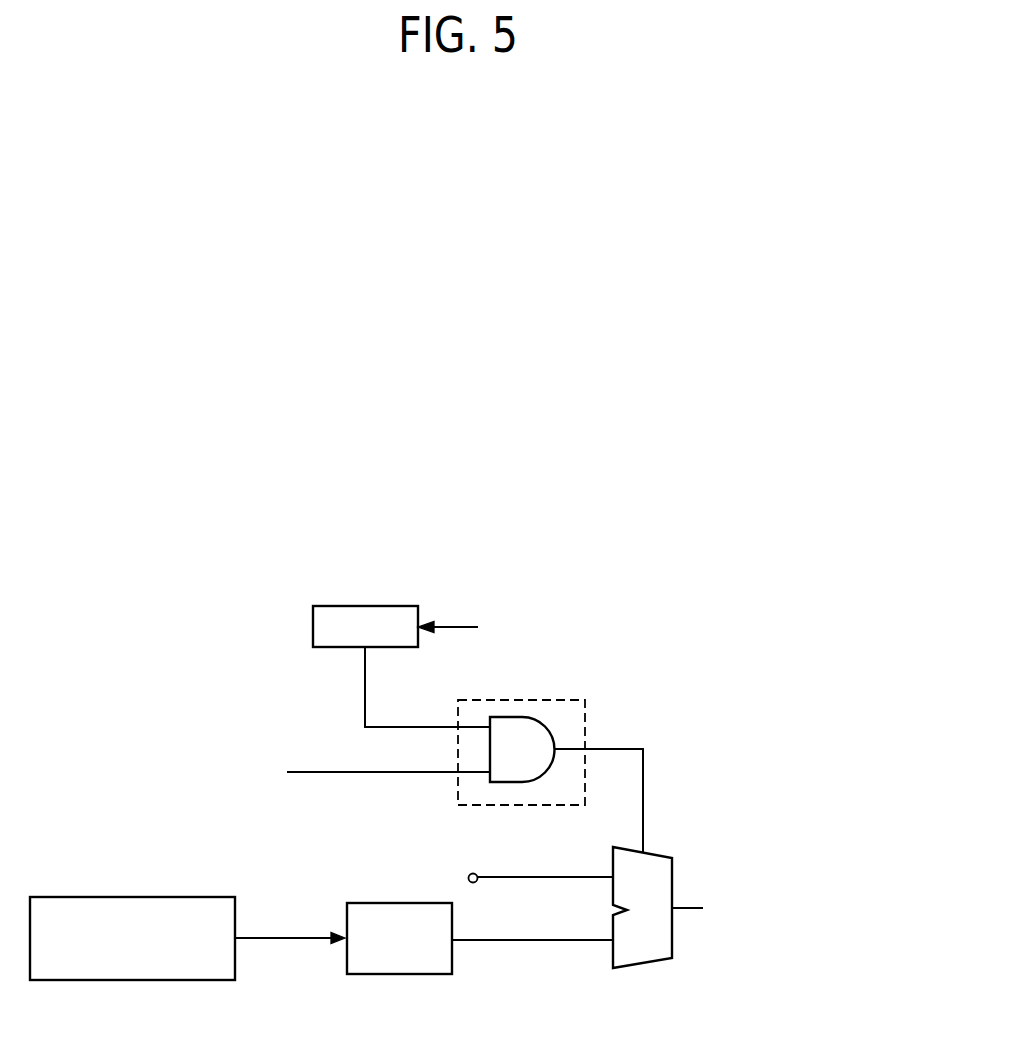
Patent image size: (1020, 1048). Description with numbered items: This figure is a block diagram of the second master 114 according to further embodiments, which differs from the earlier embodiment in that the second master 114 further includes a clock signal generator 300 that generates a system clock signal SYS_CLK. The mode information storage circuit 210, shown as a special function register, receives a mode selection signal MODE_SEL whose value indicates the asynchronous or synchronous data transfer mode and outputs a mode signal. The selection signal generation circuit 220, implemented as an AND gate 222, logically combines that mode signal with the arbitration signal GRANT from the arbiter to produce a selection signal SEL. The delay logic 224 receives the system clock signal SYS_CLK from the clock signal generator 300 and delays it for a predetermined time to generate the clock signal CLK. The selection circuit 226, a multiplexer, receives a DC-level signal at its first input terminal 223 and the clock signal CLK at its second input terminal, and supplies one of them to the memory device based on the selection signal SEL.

The second master 114 is at (680, 500).
The mode information storage circuit 210 is at (362, 605).
The selection signal generation circuit 220 is at (585, 725).
The AND gate 222 is at (537, 761).
The constant input node ("0" or "1") 223 is at (478, 874).
The delay logic 224 is at (400, 974).
The selection circuit 226 is at (645, 963).
The clock signal generator 300 is at (135, 980).